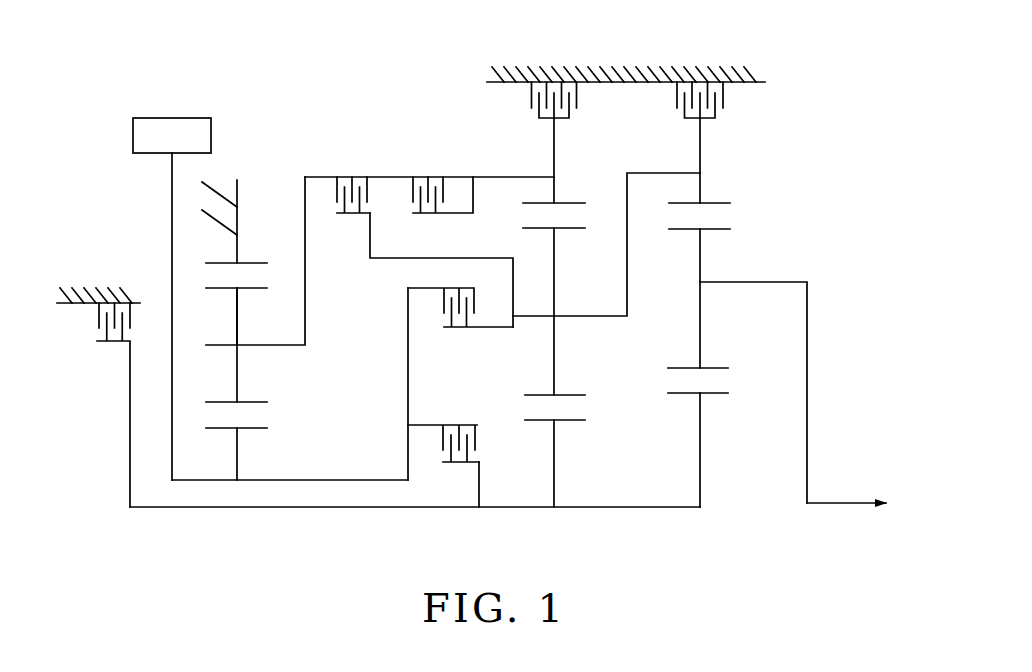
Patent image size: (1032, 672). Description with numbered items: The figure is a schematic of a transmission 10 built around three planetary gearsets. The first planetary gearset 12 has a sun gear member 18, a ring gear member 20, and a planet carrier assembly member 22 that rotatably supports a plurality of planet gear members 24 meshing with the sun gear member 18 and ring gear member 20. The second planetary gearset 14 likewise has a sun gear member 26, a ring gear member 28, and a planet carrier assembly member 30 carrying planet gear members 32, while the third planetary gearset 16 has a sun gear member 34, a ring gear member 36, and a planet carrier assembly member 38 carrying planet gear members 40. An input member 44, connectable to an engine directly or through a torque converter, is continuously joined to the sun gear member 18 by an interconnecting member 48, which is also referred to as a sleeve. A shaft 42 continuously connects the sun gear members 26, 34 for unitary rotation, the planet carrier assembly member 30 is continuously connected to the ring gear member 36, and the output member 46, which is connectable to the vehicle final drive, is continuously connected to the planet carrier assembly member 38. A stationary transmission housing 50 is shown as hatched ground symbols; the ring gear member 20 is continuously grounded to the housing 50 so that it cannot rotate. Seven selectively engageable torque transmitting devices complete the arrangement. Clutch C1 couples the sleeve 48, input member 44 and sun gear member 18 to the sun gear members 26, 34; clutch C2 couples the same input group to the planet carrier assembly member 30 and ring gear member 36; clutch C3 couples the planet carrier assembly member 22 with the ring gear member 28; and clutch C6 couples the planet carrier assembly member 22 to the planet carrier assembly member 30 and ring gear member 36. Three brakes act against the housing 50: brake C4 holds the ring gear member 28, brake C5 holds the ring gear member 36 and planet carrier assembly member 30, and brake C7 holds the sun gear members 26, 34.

The transmission 10 is at (817, 200).
The first planetary gearset 12 is at (295, 397).
The second planetary gearset 14 is at (598, 435).
The third planetary gearset 16 is at (758, 243).
The sun gear member 18 is at (253, 430).
The ring gear member 20 is at (258, 262).
The planet carrier assembly member 22 is at (273, 347).
The planet gear members 24 is at (224, 292).
The sun gear member 26 is at (535, 418).
The ring gear member 28 is at (573, 207).
The planet carrier assembly member 30 is at (583, 313).
The planet gear members 32 is at (575, 398).
The sun gear member 34 is at (718, 393).
The ring gear member 36 is at (720, 202).
The planet carrier assembly member 38 is at (792, 280).
The planet gear members 40 is at (682, 232).
The shaft 42 is at (260, 508).
The input member 44 is at (172, 185).
The output member 46 is at (857, 503).
The interconnecting member 48 is at (315, 480).
The transmission housing 50 is at (492, 67).
The clutch C1 is at (495, 447).
The clutch C2 is at (430, 308).
The clutch C3 is at (398, 192).
The brake C4 is at (510, 113).
The brake C5 is at (740, 113).
The clutch C6 is at (325, 190).
The brake C7 is at (72, 328).